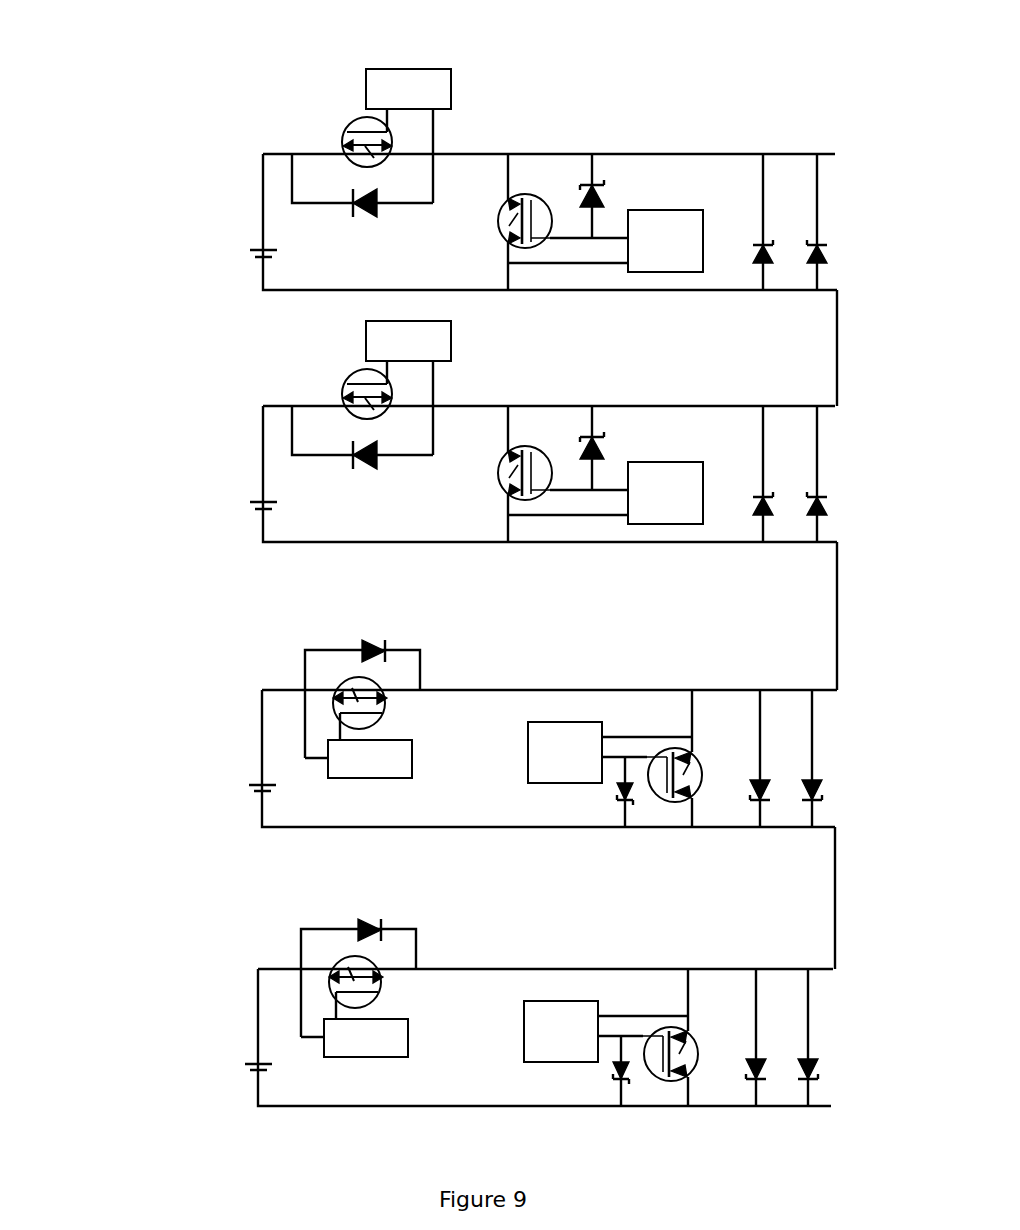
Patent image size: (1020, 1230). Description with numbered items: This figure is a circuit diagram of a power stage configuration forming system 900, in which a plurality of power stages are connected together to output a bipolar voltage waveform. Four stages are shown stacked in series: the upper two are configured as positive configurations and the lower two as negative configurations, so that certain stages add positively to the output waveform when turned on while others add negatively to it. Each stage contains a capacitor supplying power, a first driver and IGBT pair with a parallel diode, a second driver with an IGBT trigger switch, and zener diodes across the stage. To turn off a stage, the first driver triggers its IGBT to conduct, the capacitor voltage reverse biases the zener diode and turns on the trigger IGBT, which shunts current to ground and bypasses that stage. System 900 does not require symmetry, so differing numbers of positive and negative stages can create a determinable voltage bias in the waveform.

The system 900 is at (797, 91).